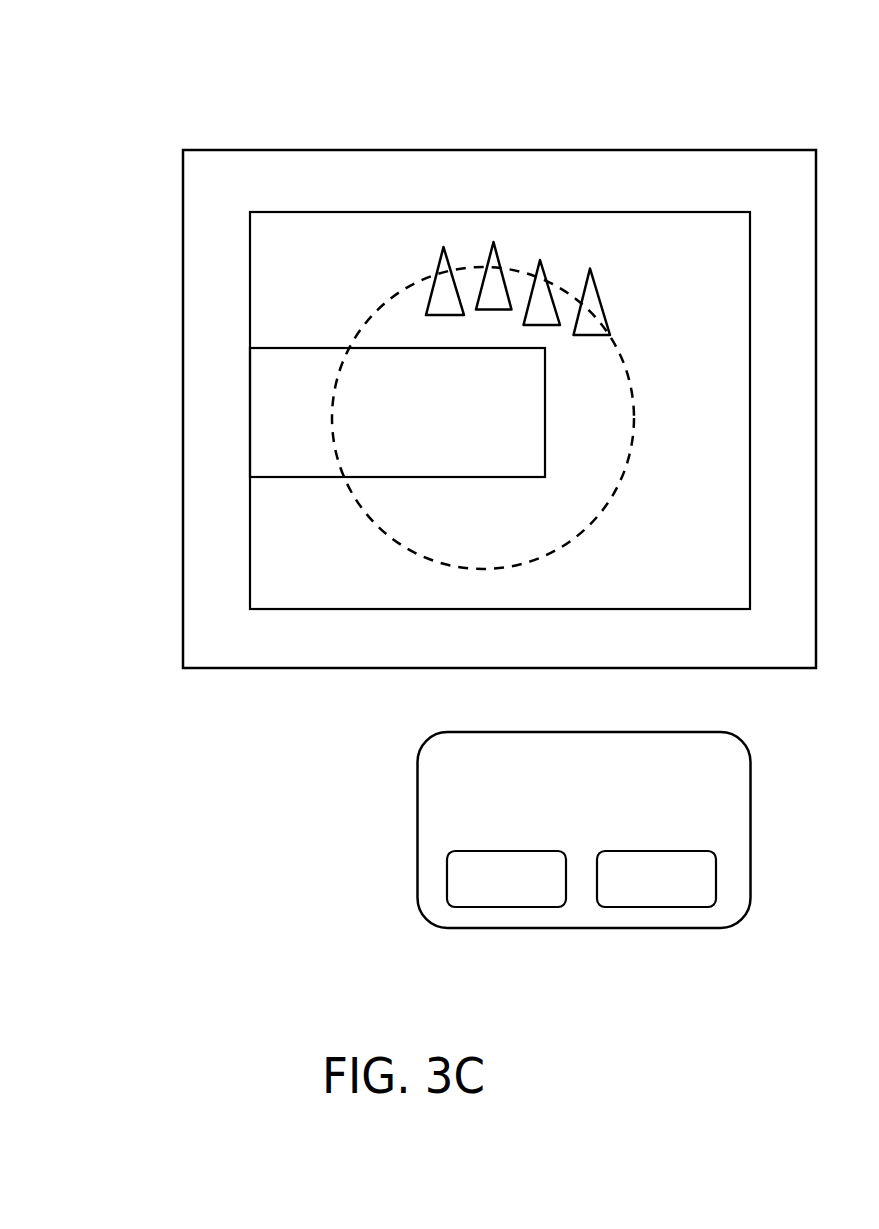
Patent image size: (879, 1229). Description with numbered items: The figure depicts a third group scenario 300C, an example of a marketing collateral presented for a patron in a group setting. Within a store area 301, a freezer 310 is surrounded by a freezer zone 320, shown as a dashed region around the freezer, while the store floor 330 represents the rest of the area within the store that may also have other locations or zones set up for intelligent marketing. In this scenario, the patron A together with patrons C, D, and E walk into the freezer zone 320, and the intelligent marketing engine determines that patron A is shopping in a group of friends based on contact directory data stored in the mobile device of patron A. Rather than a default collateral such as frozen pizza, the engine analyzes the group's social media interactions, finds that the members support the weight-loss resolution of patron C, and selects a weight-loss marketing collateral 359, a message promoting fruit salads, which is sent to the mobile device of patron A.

The third group scenario 300C is at (157, 79).
The store area 301 is at (735, 599).
The freezer 310 is at (475, 431).
The freezer zone 320 is at (435, 550).
The store floor 330 is at (800, 659).
The weight-loss marketing collateral 359 is at (419, 843).